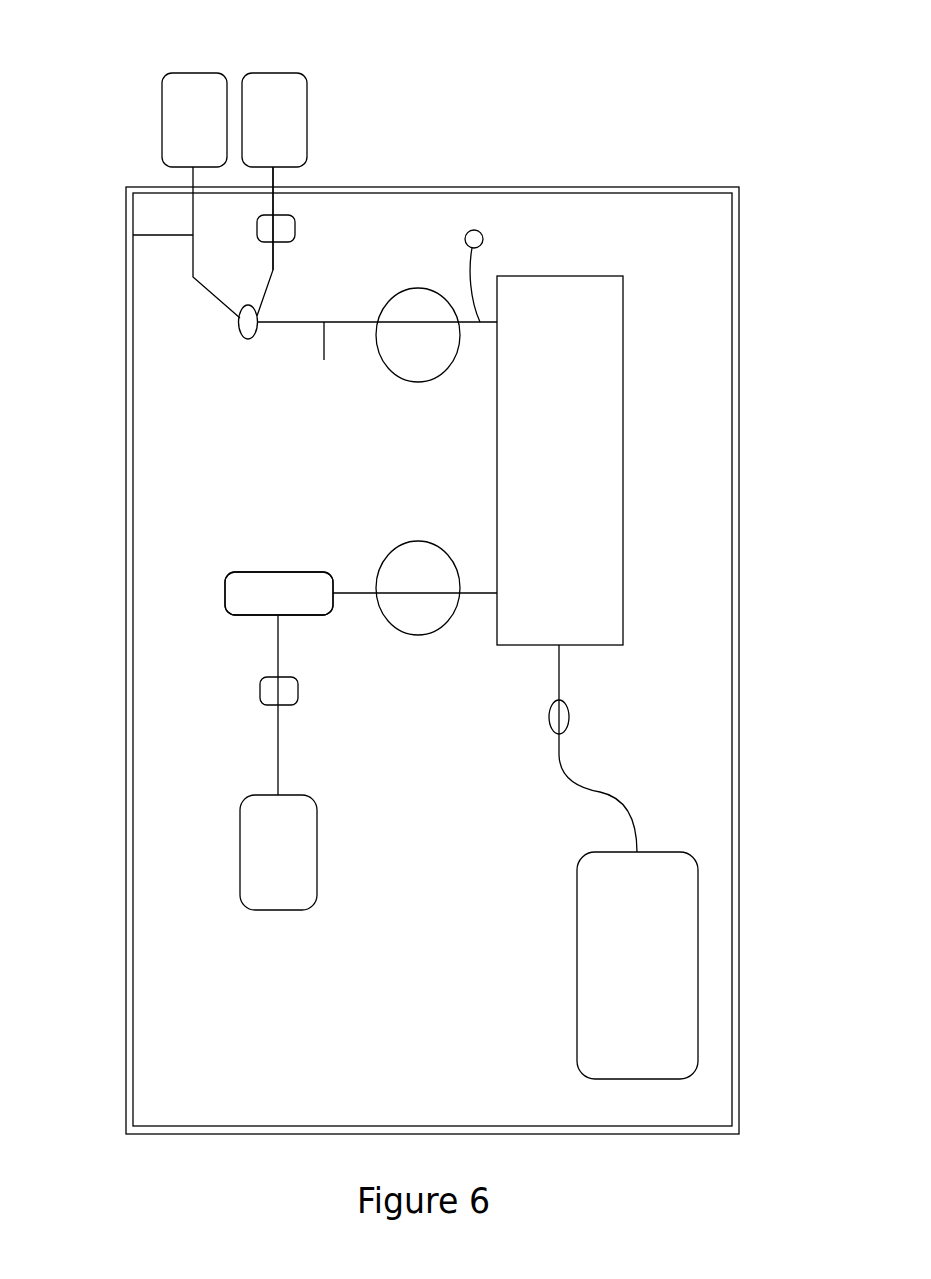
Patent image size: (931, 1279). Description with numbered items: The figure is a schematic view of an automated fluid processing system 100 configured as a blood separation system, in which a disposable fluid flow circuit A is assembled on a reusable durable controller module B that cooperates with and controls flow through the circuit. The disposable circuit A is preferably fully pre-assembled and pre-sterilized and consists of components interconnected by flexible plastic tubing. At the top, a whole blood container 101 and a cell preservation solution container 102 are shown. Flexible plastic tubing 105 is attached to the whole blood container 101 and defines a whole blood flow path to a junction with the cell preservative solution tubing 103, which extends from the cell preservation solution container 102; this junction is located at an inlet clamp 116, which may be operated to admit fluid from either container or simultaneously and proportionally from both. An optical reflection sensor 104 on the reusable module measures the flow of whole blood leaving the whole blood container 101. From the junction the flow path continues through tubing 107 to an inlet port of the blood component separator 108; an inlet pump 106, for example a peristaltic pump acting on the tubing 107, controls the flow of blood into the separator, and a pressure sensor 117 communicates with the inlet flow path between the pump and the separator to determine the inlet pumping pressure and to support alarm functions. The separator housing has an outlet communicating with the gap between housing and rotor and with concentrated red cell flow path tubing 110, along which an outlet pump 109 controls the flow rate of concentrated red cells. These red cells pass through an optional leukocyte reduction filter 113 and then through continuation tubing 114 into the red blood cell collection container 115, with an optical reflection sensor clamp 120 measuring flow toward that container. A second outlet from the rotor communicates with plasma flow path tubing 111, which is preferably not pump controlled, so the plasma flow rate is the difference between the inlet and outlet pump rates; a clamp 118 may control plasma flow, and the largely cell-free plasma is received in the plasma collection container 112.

The fluid processing system 100 is at (730, 83).
The disposable fluid flow circuit A is at (348, 83).
The reusable durable controller module B is at (708, 555).
The whole blood container 101 is at (307, 100).
The cell preservation solution container 102 is at (162, 100).
The cell preservative solution tubing 103 is at (133, 235).
The optical reflection sensor 104 is at (295, 222).
The flexible plastic tubing 105 is at (275, 264).
The inlet pump 106 is at (415, 382).
The tubing 107 is at (324, 360).
The blood component separator 108 is at (623, 387).
The outlet pump 109 is at (415, 635).
The concentrated red cell flow path tubing 110 is at (295, 572).
The plasma flow path tubing 111 is at (560, 672).
The plasma collection container 112 is at (577, 952).
The leukocyte reduction filter 113 is at (225, 583).
The continuation tubing 114 is at (280, 738).
The red blood cell collection container 115 is at (317, 843).
The inlet clamp 116 is at (247, 339).
The pressure sensor 117 is at (484, 235).
The clamp 118 is at (549, 719).
The optical reflection sensor clamp 120 is at (260, 690).